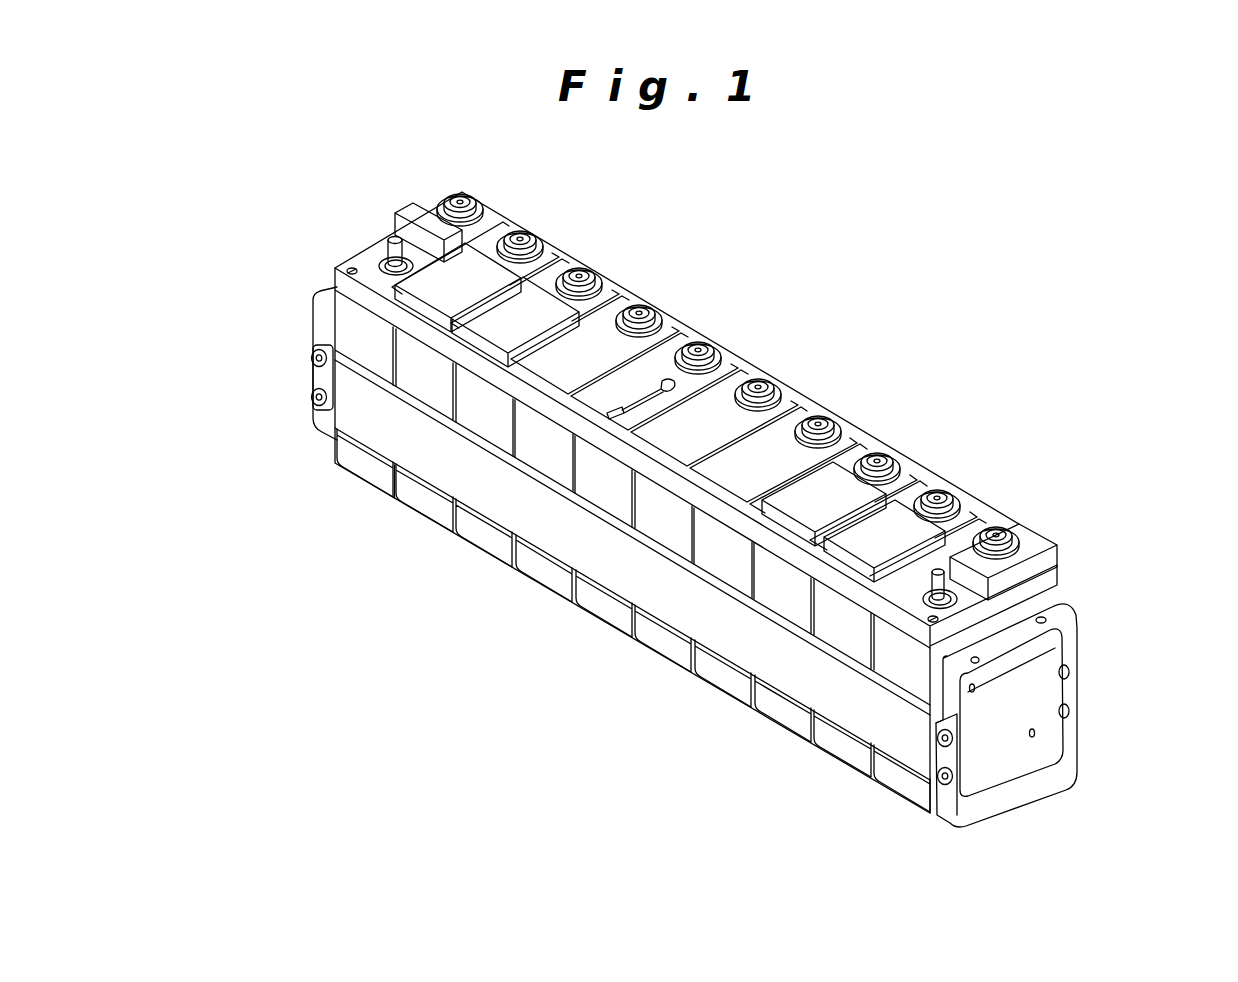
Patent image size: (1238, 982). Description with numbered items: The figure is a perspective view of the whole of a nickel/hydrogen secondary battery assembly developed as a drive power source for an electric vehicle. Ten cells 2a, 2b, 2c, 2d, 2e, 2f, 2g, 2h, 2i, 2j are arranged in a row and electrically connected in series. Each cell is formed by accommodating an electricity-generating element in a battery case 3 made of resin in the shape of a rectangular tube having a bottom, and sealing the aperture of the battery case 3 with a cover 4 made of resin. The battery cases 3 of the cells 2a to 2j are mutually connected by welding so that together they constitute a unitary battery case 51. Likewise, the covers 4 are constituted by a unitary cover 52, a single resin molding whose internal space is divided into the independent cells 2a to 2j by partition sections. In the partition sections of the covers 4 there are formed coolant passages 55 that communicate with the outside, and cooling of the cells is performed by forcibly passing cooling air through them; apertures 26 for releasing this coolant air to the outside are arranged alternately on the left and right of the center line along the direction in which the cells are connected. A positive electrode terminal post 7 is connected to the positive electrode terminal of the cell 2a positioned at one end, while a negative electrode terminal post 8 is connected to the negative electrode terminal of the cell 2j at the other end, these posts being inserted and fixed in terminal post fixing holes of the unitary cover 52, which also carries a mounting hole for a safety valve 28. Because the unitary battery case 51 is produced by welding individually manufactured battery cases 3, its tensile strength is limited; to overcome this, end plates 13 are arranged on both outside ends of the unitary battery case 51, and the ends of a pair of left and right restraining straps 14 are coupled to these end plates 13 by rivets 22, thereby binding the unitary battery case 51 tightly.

The cell 2a is at (359, 493).
The cell 2b is at (424, 533).
The cell 2c is at (484, 570).
The cell 2d is at (546, 605).
The cell 2e is at (606, 645).
The cell 2f is at (662, 680).
The cell 2g is at (726, 715).
The cell 2h is at (789, 752).
The cell 2i is at (849, 787).
The cell 2j is at (904, 822).
The battery case 3 is at (355, 328).
The cover 4 is at (554, 256).
The positive electrode terminal post 7 is at (386, 252).
The negative electrode terminal post 8 is at (950, 570).
The end plate 13 is at (317, 297).
The restraining strap 14 is at (362, 410).
The rivet 22 is at (312, 398).
The aperture 26 is at (736, 367).
The safety valve 28 is at (703, 352).
The unitary battery case 51 is at (403, 507).
The unitary cover 52 is at (752, 337).
The coolant passage 55 is at (557, 260).